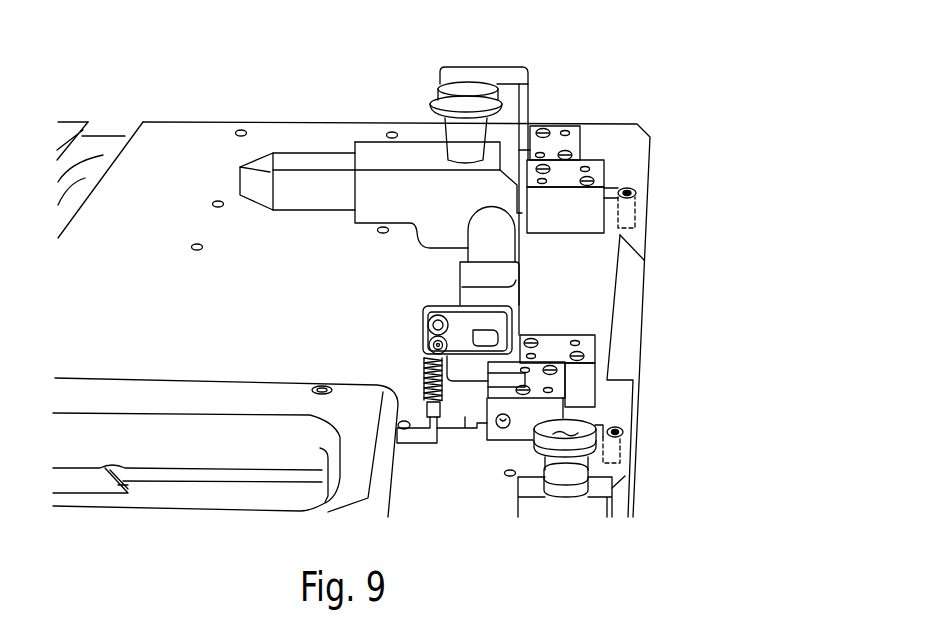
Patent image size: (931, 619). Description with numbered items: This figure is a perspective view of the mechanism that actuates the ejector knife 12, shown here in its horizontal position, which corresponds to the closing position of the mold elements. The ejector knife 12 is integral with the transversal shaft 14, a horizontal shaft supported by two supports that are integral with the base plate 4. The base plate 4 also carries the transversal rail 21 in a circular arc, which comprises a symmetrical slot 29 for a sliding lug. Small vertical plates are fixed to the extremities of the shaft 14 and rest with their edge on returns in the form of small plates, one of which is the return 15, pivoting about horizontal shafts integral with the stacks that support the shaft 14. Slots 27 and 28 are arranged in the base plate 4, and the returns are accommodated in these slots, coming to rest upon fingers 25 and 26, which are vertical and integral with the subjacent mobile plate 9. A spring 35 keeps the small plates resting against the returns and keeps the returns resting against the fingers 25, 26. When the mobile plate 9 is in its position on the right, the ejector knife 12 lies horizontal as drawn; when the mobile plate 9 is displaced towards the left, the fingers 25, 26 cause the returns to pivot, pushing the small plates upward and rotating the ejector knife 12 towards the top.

The base plate 4 is at (204, 133).
The mobile plate 9 is at (637, 473).
The ejector knife 12 is at (378, 150).
The transversal shaft 14 is at (543, 131).
The return 15 is at (465, 418).
The transversal rail 21 is at (105, 146).
The finger 25 is at (624, 433).
The finger 26 is at (630, 197).
The slot 27 is at (601, 422).
The slot 28 is at (616, 186).
The slot 29 is at (82, 170).
The spring 35 is at (457, 357).